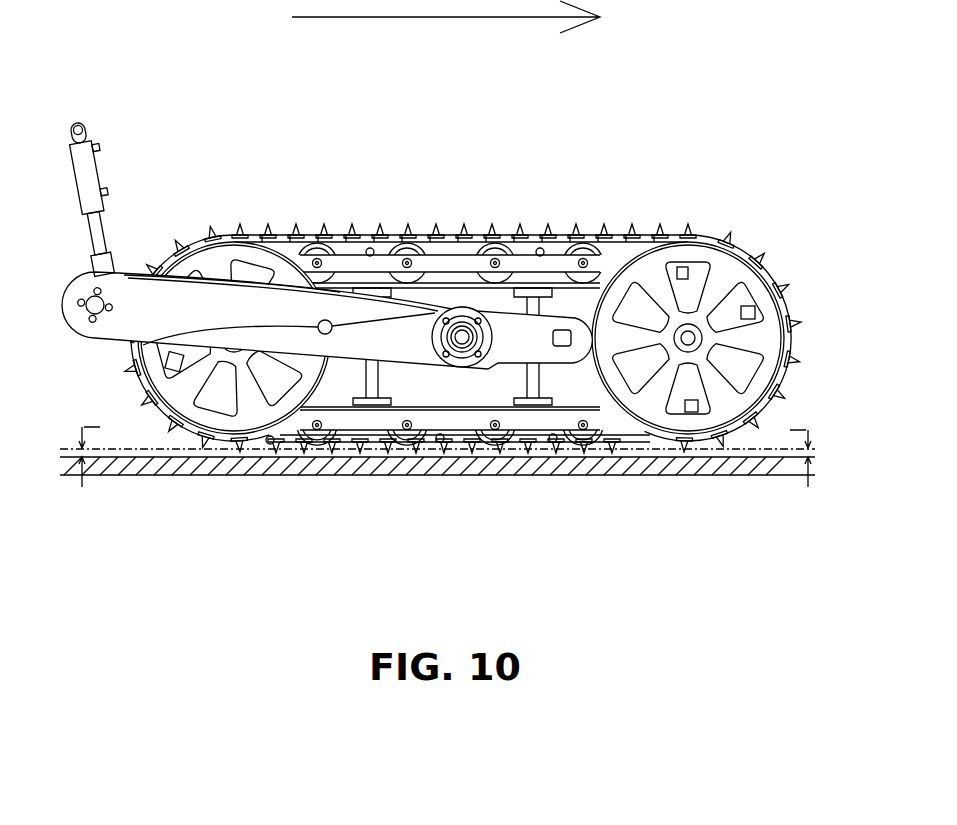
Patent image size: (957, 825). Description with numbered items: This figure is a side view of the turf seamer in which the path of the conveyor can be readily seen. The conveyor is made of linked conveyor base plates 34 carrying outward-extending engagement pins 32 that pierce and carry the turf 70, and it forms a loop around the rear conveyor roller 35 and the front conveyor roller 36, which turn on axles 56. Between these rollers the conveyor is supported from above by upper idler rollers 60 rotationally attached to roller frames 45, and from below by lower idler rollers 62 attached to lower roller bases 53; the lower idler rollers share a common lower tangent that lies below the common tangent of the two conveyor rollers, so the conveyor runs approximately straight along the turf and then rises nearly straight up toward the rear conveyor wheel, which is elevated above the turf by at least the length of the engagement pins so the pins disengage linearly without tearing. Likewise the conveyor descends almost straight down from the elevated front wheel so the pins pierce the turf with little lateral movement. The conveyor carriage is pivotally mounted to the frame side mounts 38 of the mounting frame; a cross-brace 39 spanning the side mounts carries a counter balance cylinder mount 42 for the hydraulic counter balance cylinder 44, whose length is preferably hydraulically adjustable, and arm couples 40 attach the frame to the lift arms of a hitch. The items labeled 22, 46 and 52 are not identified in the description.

The track assembly 22 is at (405, 311).
The engagement pins 32 is at (320, 456).
The conveyor base plates 34 is at (240, 457).
The rear conveyor roller 35 is at (211, 261).
The front conveyor roller 36 is at (685, 316).
The frame side mounts 38 is at (134, 287).
The cross-brace 39 is at (90, 310).
The arm couples 40 is at (301, 349).
The counter balance cylinder mount 42 is at (92, 271).
The hydraulic counter balance cylinder 44 is at (98, 203).
The roller frames 45 is at (428, 266).
The direction of travel 46 is at (446, 25).
The hub 52 is at (445, 356).
The lower roller bases 53 is at (542, 418).
The axles 56 is at (690, 348).
The upper idler rollers 60 is at (563, 243).
The lower idler rollers 62 is at (597, 472).
The turf 70 is at (712, 468).